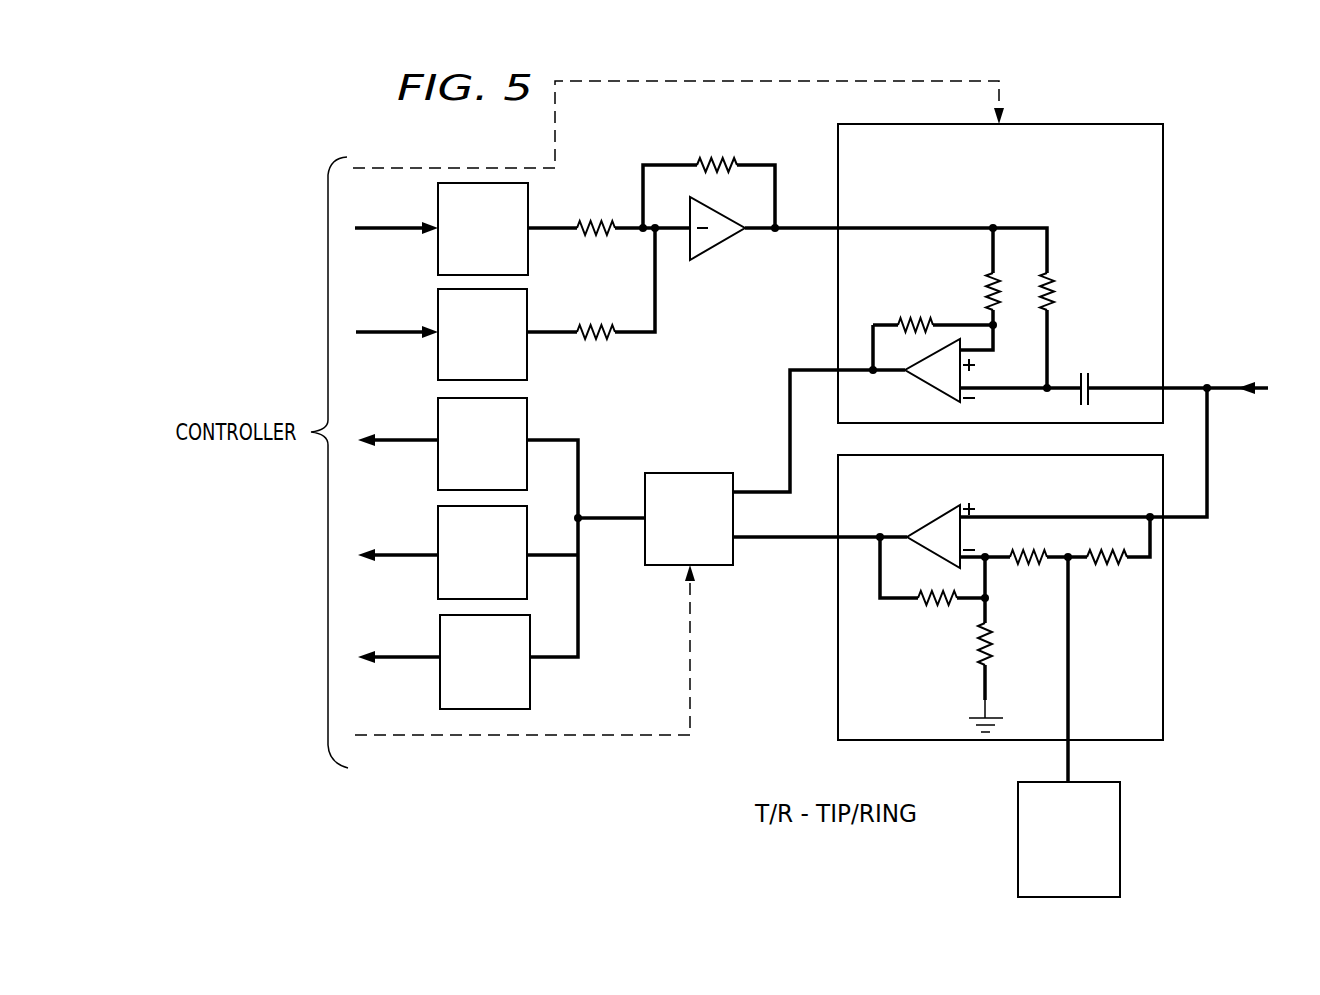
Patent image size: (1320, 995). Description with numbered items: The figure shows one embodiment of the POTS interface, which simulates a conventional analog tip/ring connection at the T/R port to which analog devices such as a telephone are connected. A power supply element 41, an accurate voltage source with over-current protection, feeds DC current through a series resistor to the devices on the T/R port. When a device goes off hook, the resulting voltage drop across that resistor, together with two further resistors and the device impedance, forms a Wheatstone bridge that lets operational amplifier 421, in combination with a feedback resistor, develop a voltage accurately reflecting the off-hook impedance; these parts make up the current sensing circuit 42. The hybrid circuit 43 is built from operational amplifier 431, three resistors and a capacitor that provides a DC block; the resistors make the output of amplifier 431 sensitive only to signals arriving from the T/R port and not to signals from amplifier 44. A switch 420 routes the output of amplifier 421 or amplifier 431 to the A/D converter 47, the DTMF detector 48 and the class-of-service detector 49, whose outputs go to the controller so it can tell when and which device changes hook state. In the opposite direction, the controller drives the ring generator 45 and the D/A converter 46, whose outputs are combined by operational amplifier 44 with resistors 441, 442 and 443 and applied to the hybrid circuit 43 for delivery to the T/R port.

The power supply element 41 is at (1120, 826).
The current sensing circuit 42 is at (1163, 660).
The hybrid circuit 43 is at (1163, 248).
The operational amplifier 44 is at (712, 255).
The ring generator 45 is at (528, 260).
The D/A converter 46 is at (438, 292).
The A/D converter 47 is at (438, 410).
The DTMF detector 48 is at (438, 524).
The class-of-service detector 49 is at (440, 630).
The switch 420 is at (722, 565).
The operational amplifier 421 is at (930, 522).
The operational amplifier 431 is at (933, 385).
The resistor 441 is at (717, 160).
The resistor 442 is at (596, 222).
The resistor 443 is at (600, 340).